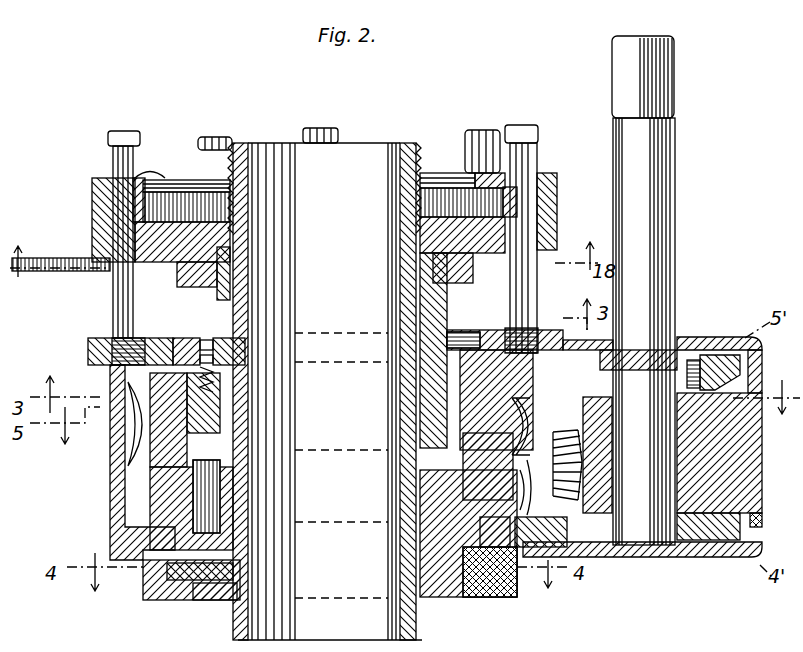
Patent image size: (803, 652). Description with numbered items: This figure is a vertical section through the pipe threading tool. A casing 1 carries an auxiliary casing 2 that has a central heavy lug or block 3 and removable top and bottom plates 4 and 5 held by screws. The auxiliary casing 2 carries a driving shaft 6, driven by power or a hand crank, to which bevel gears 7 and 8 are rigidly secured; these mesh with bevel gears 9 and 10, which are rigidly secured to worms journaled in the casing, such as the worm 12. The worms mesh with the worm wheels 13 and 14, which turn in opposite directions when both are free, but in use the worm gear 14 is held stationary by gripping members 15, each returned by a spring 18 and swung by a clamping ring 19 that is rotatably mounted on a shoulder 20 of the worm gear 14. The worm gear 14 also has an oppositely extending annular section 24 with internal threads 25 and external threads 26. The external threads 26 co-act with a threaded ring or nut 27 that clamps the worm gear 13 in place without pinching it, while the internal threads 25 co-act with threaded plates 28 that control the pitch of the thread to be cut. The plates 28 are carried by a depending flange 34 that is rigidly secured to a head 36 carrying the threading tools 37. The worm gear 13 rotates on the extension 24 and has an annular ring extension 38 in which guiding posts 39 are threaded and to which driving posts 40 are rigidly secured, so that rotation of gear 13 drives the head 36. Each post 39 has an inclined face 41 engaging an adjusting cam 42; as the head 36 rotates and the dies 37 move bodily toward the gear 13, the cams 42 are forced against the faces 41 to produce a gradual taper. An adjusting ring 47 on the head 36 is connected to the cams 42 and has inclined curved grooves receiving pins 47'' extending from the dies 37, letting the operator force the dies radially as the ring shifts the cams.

The casing 1 is at (112, 492).
The auxiliary casing 2 is at (755, 530).
The heavy lug or block 3 is at (750, 460).
The top plate 4 is at (748, 557).
The bottom plate 5 is at (715, 340).
The driving shaft 6 is at (643, 290).
The bevel gear 7 is at (738, 372).
The bevel gear 8 is at (710, 545).
The bevel gear 9 is at (597, 455).
The bevel gear 10 is at (568, 545).
The worm 12 is at (520, 455).
The worm wheel 13 is at (522, 428).
The worm wheel 14 is at (540, 555).
The gripping member 15 is at (170, 578).
The spring 18 is at (61, 276).
The clamping ring 19 is at (165, 598).
The shoulder 20 is at (215, 600).
The annular section 24 is at (220, 430).
The internal threads 25 is at (205, 395).
The external threads 26 is at (205, 360).
The threaded ring or nut 27 is at (180, 352).
The threaded plate 28 is at (222, 413).
The depending flange 34 is at (205, 297).
The head 36 is at (92, 208).
The threading tool 37 is at (188, 200).
The annular ring extension 38 is at (485, 350).
The guiding post 39 is at (132, 134).
The driving post 40 is at (545, 268).
The inclined face 41 is at (143, 178).
The adjusting cam 42 is at (512, 200).
The adjusting ring 47 is at (462, 173).
The pin 47'' is at (113, 171).